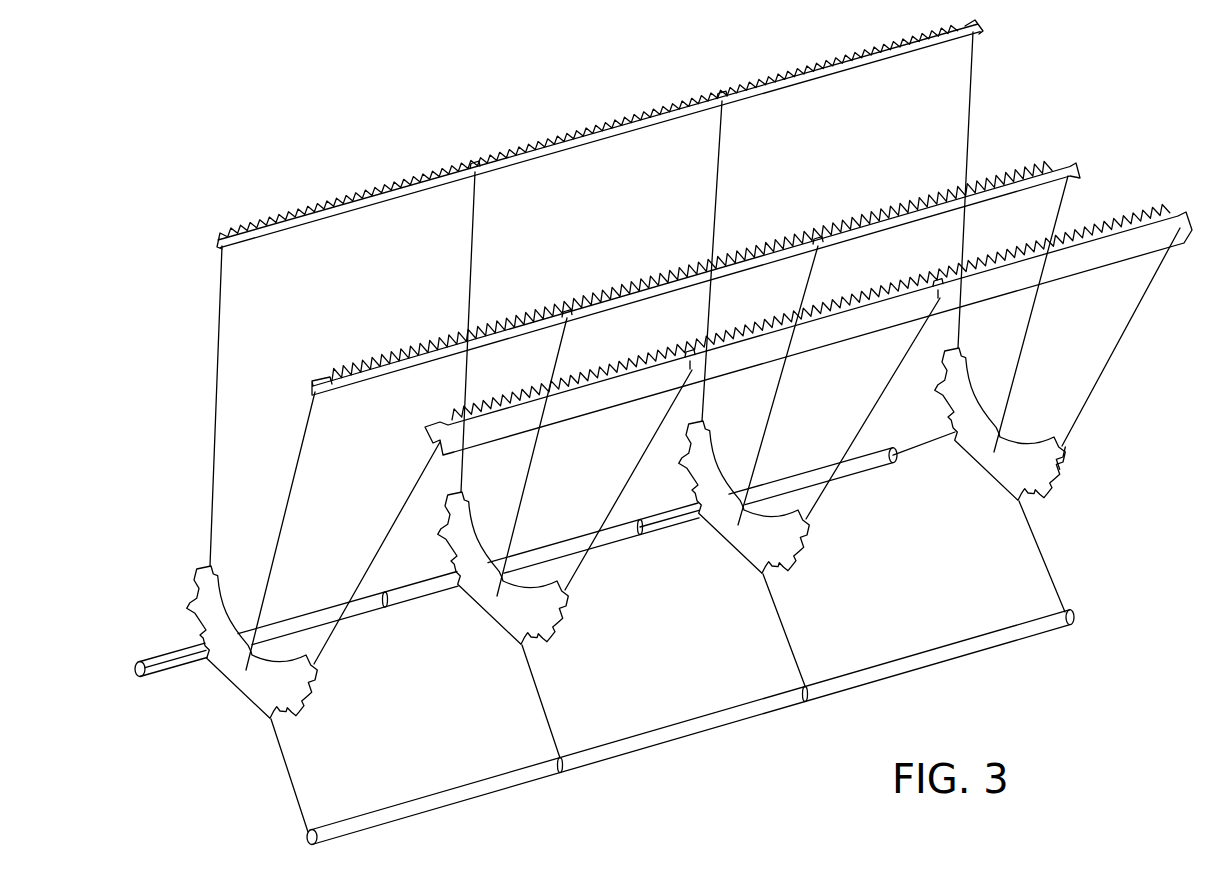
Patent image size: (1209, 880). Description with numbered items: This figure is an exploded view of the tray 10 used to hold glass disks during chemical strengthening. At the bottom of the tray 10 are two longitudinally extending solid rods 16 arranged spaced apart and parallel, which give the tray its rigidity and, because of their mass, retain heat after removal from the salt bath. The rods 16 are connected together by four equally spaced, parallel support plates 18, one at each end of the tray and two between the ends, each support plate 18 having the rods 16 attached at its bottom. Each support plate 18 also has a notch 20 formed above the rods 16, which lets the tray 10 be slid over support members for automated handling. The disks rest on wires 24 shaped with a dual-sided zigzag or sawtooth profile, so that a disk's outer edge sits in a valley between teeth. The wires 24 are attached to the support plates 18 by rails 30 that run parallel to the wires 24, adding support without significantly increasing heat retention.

The tray 10 is at (90, 858).
The solid rods 16 is at (293, 826).
The support plates 18 is at (335, 684).
The notch 20 is at (1068, 482).
The wires 24 is at (650, 126).
The rails 30 is at (1171, 203).